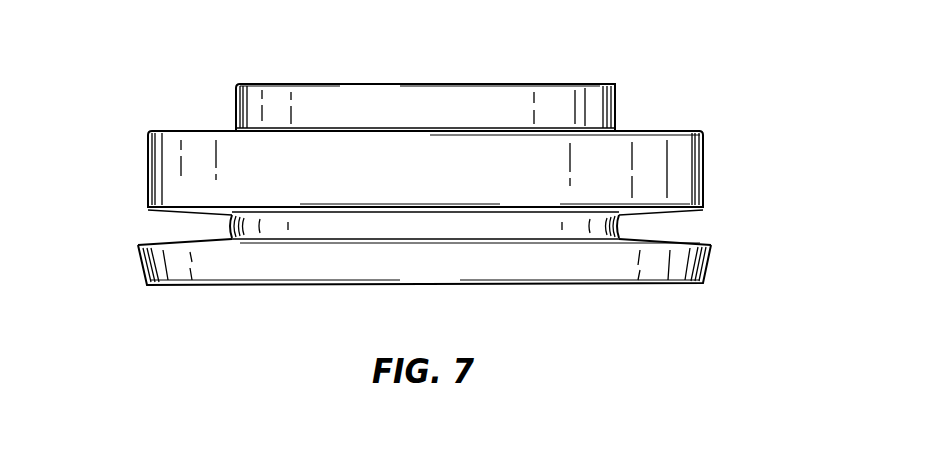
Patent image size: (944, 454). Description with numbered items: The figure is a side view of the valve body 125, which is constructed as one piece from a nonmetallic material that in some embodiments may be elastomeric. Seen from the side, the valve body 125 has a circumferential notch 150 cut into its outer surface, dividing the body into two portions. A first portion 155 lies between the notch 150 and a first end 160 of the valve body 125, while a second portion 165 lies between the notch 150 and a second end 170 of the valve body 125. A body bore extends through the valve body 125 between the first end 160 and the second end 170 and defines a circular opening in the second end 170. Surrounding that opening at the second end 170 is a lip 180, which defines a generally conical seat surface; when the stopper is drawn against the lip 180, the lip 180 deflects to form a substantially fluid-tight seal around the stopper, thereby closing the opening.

The valve body 125 is at (166, 53).
The lip 180 is at (500, 101).
The second end 170 is at (632, 126).
The second portion 165 is at (703, 173).
The circumferential notch 150 is at (676, 228).
The first portion 155 is at (711, 262).
The first end 160 is at (592, 285).